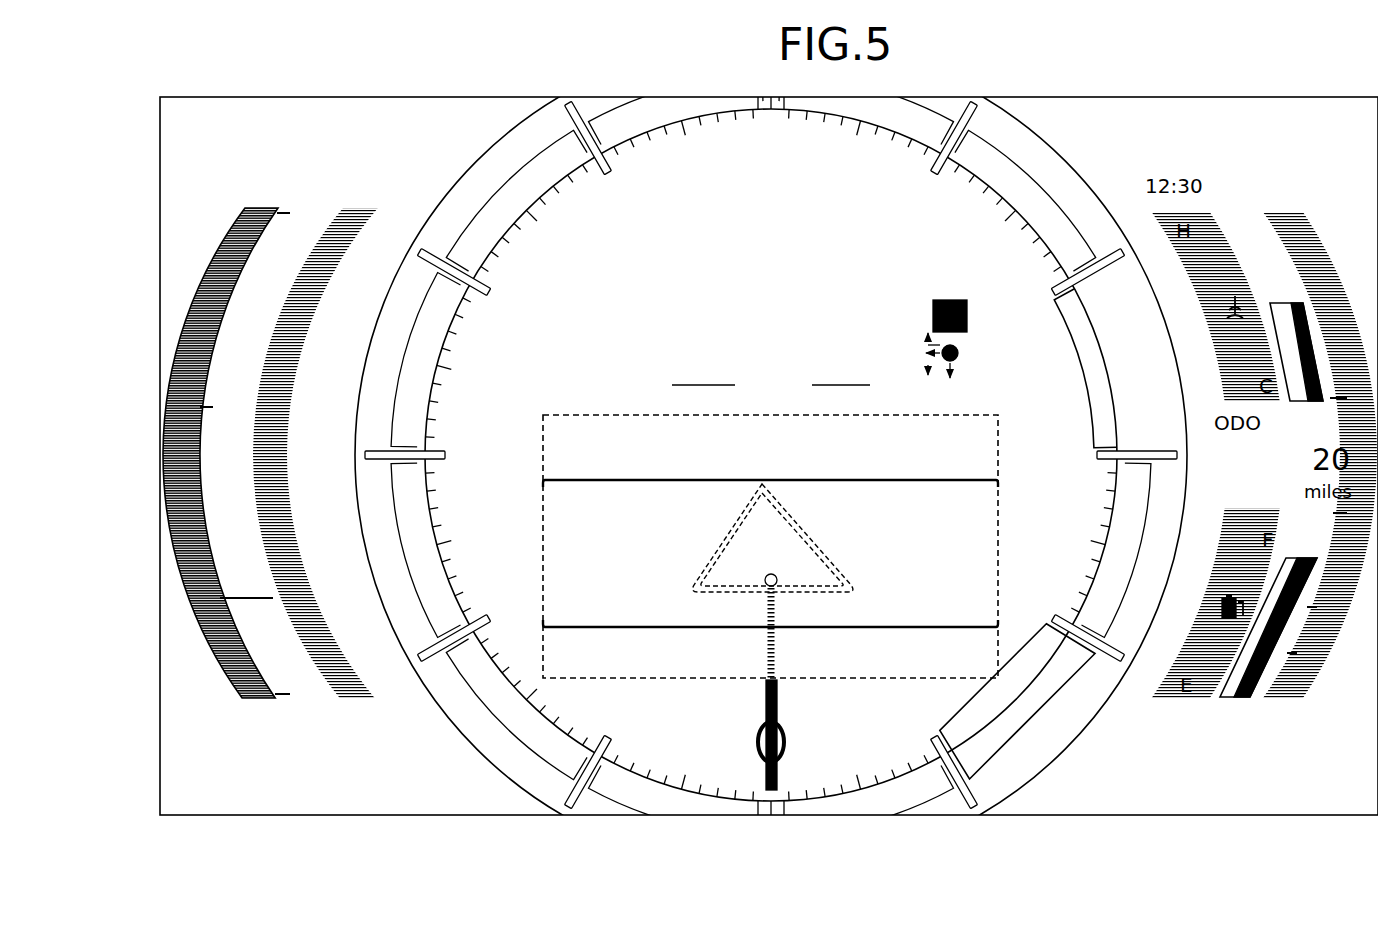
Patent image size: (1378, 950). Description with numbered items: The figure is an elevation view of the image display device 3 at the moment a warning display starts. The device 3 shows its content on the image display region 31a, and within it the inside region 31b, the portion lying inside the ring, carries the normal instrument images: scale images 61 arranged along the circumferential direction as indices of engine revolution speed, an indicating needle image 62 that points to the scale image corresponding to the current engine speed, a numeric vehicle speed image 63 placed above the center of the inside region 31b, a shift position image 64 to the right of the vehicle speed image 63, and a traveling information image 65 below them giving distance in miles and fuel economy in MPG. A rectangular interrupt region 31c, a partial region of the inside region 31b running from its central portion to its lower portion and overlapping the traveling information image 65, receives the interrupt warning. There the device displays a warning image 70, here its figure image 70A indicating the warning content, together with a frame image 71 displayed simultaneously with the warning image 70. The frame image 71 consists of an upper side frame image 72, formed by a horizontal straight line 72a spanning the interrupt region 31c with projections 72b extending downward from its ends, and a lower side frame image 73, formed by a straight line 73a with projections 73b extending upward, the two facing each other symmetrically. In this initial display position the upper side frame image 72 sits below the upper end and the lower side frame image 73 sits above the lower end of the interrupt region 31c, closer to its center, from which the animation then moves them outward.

The image display device 3 is at (288, 90).
The image display region 31a is at (273, 186).
The inside region 31b is at (498, 346).
The interrupt region 31c is at (997, 414).
The scale images 61 is at (612, 235).
The indicating needle image 62 is at (784, 710).
The vehicle speed image 63 is at (746, 288).
The shift position image 64 is at (898, 298).
The traveling information image 65 is at (698, 440).
The warning image 70 is at (737, 549).
The figure image 70A is at (714, 519).
The frame image 71 is at (784, 548).
The upper side frame image 72 is at (764, 473).
The straight line 72a is at (915, 479).
The projections 72b is at (544, 484).
The lower side frame image 73 is at (801, 602).
The straight line 73a is at (627, 628).
The projections 73b is at (546, 622).